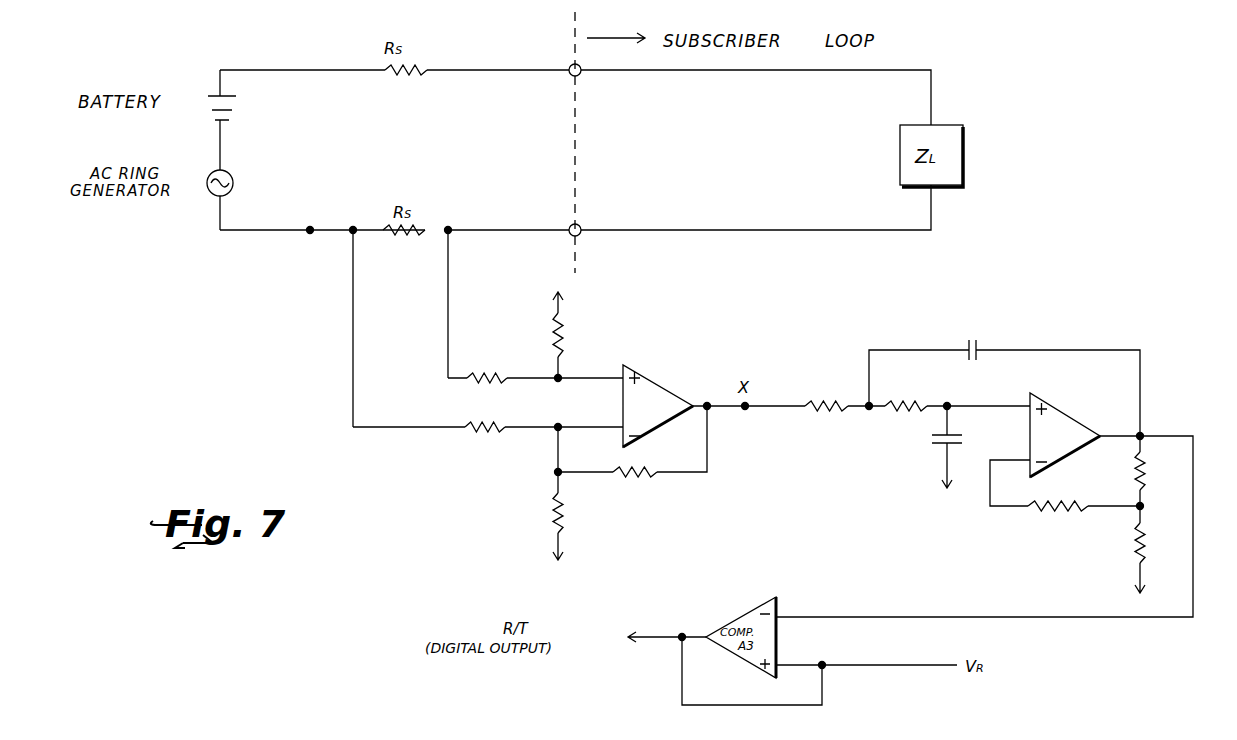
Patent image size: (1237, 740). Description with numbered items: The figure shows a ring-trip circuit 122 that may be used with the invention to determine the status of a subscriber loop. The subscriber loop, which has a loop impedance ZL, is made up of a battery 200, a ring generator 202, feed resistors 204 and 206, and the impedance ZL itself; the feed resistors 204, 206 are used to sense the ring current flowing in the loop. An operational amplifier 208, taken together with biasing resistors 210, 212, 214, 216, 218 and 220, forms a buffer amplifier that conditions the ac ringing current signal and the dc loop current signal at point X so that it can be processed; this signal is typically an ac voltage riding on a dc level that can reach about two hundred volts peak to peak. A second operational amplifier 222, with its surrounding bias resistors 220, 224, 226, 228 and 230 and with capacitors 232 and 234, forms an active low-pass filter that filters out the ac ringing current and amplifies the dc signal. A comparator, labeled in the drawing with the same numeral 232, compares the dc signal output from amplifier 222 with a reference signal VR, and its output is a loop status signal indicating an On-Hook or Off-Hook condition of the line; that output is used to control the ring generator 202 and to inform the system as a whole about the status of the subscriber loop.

The ring-trip circuit 122 is at (735, 287).
The battery 200 is at (211, 93).
The ring generator 202 is at (211, 197).
The feed resistor 204 is at (419, 67).
The feed resistor 206 is at (412, 236).
The operational amplifier 208 is at (663, 395).
The biasing resistor 210 is at (505, 366).
The biasing resistor 212 is at (488, 415).
The biasing resistor 214 is at (565, 330).
The biasing resistor 216 is at (565, 512).
The biasing resistor 218 is at (650, 470).
The biasing resistor 220 is at (843, 384).
The operational amplifier 222 is at (1068, 420).
The bias resistor 224 is at (917, 402).
The bias resistor 226 is at (1033, 516).
The bias resistor 228 is at (1158, 466).
The bias resistor 230 is at (1147, 553).
The capacitor 232 is at (978, 343).
The capacitor 234 is at (963, 441).